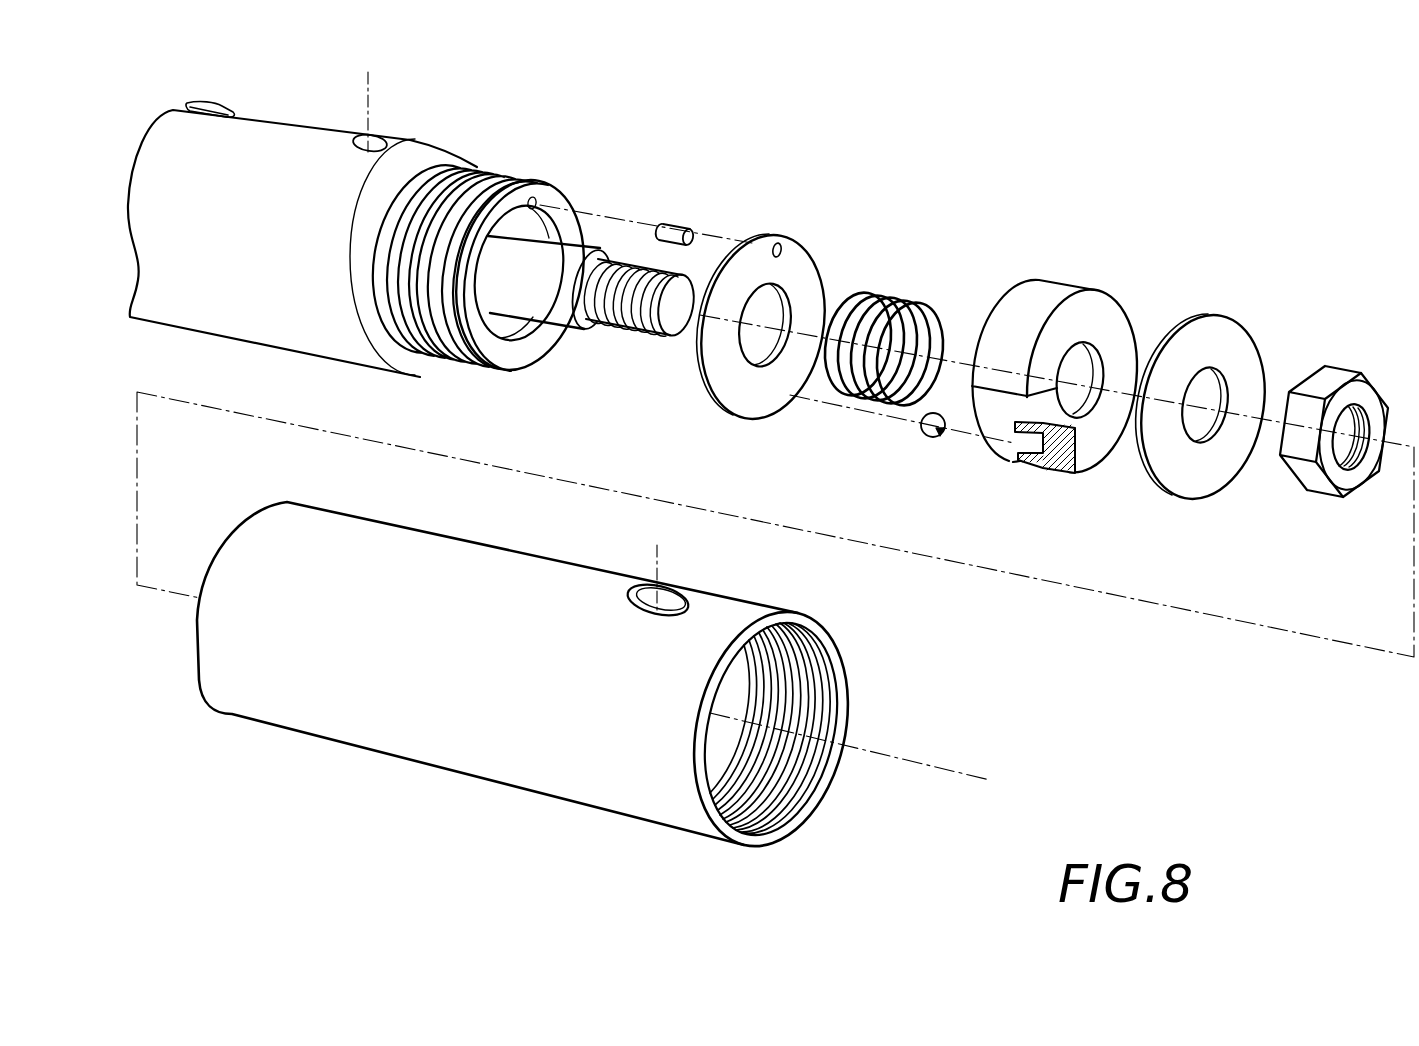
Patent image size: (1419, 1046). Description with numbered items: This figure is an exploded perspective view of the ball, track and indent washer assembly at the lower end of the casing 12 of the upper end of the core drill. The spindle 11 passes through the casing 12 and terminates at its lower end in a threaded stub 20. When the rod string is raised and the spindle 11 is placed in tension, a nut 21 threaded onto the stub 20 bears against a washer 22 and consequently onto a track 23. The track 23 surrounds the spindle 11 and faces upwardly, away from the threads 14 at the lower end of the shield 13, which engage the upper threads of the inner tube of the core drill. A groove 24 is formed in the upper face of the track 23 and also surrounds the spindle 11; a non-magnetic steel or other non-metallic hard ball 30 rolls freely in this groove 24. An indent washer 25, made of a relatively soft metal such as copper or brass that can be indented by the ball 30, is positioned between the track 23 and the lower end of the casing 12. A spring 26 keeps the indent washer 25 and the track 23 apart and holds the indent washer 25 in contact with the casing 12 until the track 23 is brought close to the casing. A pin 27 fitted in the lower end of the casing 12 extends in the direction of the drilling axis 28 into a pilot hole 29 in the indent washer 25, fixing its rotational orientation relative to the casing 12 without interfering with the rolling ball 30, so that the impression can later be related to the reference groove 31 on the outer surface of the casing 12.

The spindle 11 is at (540, 307).
The casing 12 is at (268, 132).
The shield 13 is at (462, 736).
The threads 14 is at (822, 692).
The threaded stub 20 is at (630, 337).
The nut 21 is at (1333, 378).
The washer 22 is at (1228, 333).
The track 23 is at (1060, 290).
The groove 24 is at (1016, 443).
The indent washer 25 is at (803, 267).
The spring 26 is at (917, 303).
The pin 27 is at (676, 224).
The drilling axis 28 is at (861, 754).
The pilot hole 29 is at (782, 243).
The ball 30 is at (920, 433).
The reference groove 31 is at (222, 107).